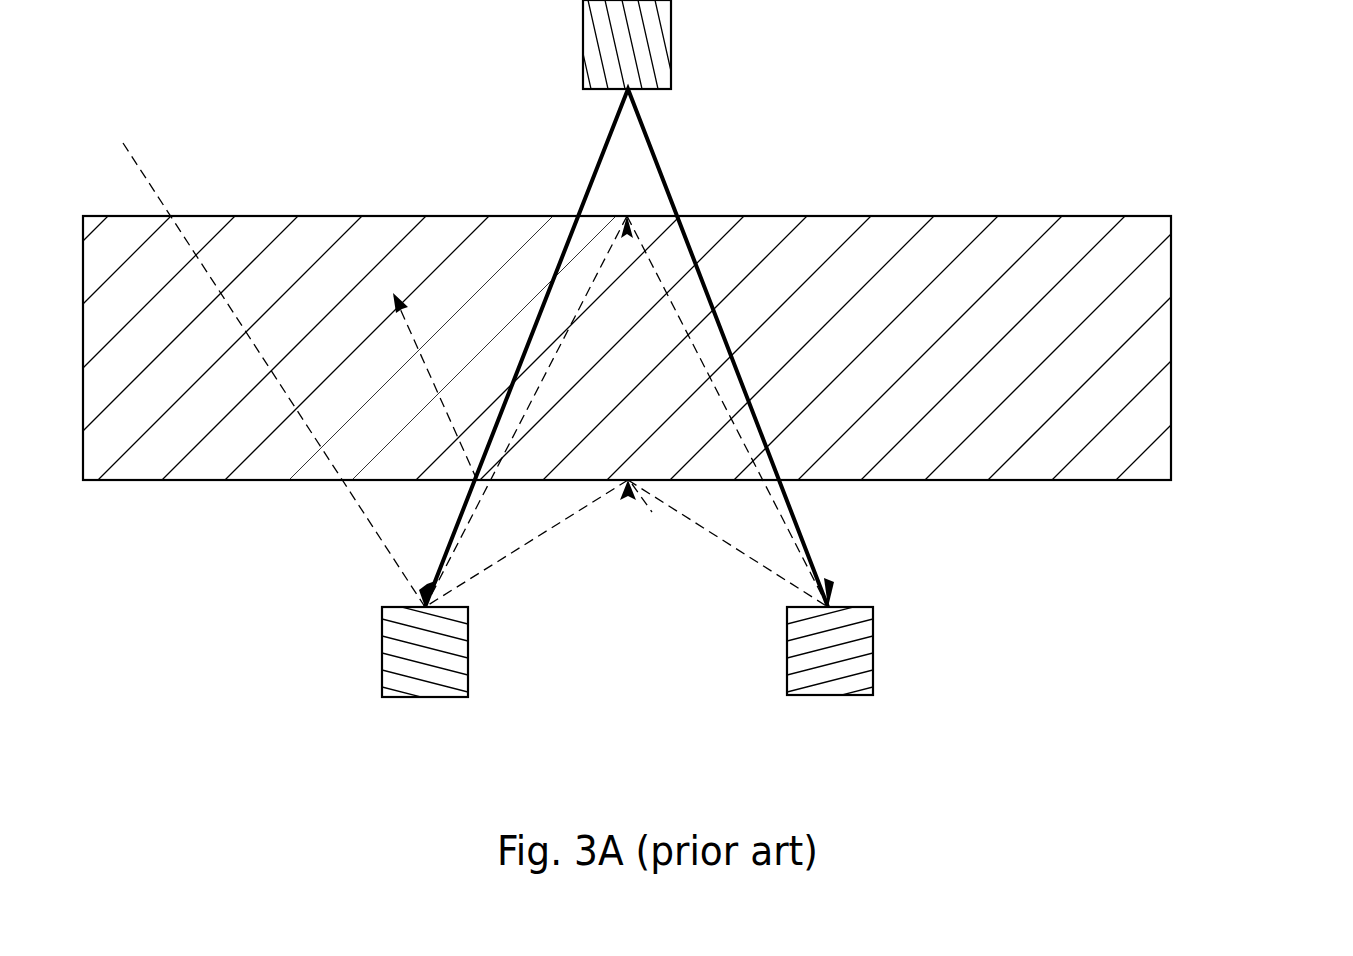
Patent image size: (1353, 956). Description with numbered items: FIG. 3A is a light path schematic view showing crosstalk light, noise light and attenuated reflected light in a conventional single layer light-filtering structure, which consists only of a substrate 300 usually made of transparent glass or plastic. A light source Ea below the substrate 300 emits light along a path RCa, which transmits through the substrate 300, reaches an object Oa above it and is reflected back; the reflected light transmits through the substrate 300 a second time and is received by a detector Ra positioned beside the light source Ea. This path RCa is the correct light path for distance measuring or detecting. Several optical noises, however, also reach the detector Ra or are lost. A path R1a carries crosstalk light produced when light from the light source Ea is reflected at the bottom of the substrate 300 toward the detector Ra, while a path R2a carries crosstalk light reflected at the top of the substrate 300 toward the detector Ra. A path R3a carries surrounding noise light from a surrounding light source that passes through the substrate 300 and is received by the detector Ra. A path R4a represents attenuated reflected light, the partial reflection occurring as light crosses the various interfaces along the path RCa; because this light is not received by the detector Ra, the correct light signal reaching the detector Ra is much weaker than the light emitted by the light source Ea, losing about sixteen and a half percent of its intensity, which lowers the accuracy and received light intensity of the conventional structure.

The substrate 300 is at (1171, 349).
The object Oa is at (671, 43).
The detector Ra is at (418, 697).
The light source Ea is at (826, 695).
The path RCa is at (665, 180).
The path R1a is at (727, 542).
The path R2a is at (740, 466).
The path R3a is at (368, 521).
The path R4a is at (420, 366).